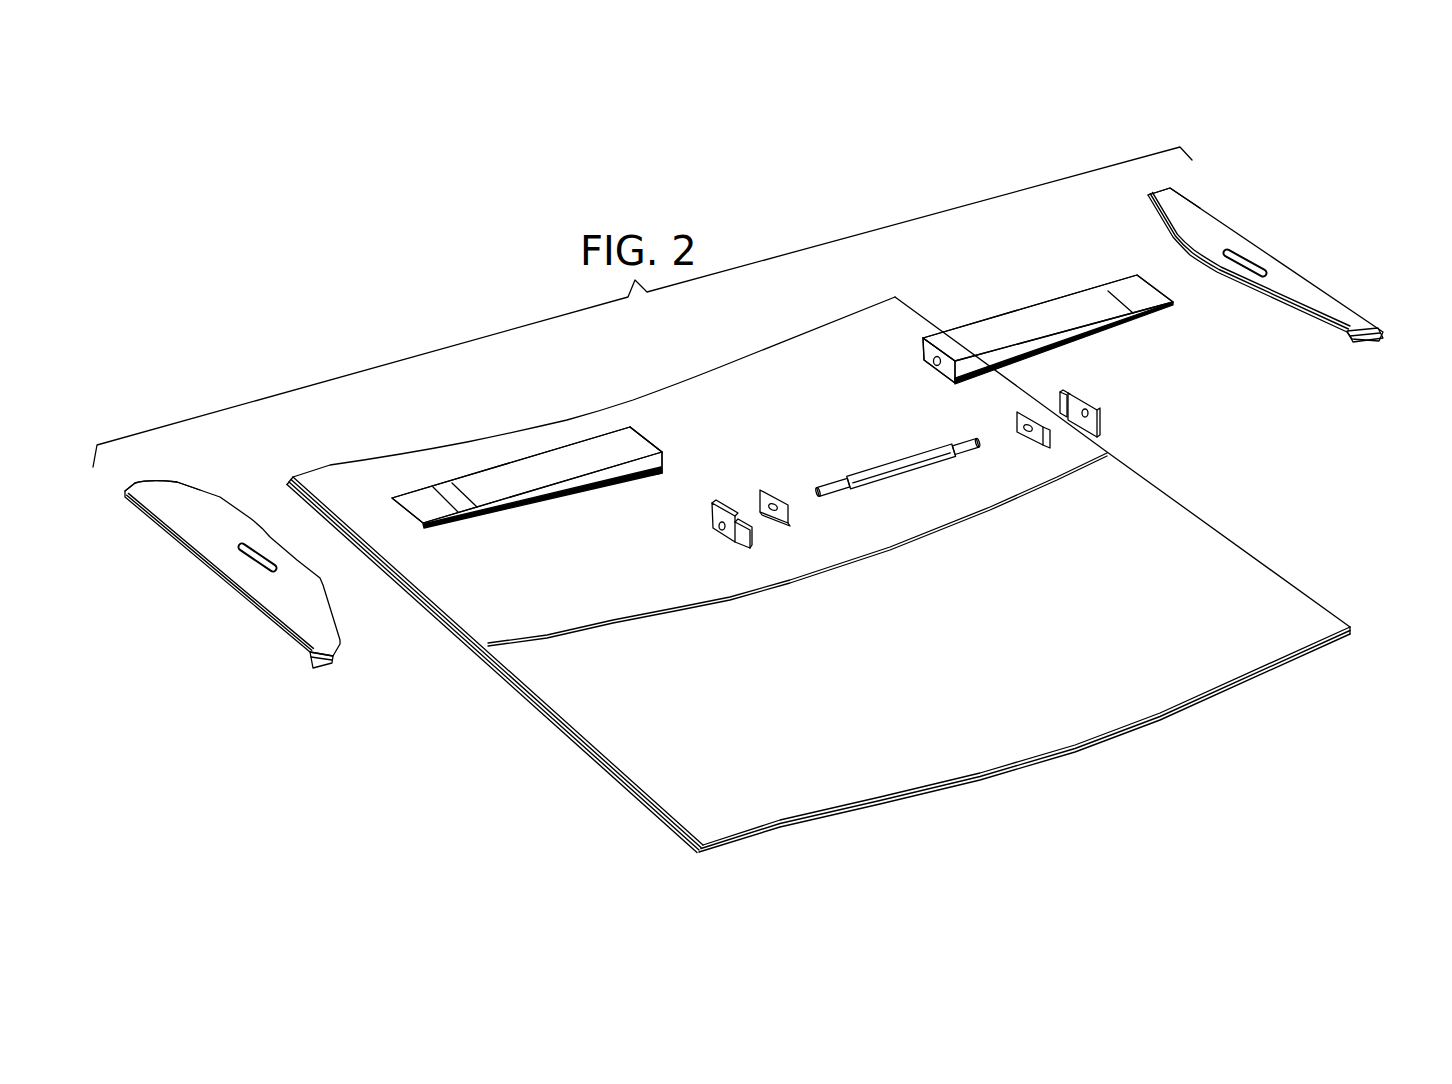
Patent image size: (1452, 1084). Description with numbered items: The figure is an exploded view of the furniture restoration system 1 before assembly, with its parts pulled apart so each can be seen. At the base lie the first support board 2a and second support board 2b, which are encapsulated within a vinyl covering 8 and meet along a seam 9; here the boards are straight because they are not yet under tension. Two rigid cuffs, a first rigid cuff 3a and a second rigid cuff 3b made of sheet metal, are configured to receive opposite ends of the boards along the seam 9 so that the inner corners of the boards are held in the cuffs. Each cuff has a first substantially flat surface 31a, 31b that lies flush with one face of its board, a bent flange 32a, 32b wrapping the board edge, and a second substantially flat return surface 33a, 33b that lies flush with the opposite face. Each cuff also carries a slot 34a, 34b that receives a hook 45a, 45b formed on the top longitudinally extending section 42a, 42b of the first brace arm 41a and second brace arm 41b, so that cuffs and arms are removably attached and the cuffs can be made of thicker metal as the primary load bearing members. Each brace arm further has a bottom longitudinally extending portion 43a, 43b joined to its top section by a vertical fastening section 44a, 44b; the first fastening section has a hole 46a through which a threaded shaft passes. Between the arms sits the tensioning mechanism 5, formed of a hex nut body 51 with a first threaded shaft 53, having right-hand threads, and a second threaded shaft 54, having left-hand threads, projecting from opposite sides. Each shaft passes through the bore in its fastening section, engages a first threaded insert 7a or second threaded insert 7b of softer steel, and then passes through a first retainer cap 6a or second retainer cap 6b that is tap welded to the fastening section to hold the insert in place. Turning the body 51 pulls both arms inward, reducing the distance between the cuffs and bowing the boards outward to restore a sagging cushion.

The furniture restoration system 1 is at (478, 392).
The first support board 2a is at (1284, 647).
The second support board 2b is at (330, 466).
The first rigid cuff 3a is at (1271, 284).
The second rigid cuff 3b is at (247, 588).
The first substantially flat surface 31a is at (1366, 343).
The first substantially flat surface 31b is at (328, 664).
The bent flange 32a is at (1385, 330).
The bent flange 32b is at (280, 633).
The second substantially flat return surface 33a is at (1163, 198).
The second substantially flat return surface 33b is at (152, 487).
The slot 34a is at (1262, 268).
The slot 34b is at (263, 557).
The first brace arm 41a is at (1005, 315).
The second brace arm 41b is at (522, 498).
The top longitudinally extending section 42a is at (975, 372).
The top longitudinally extending section 42b is at (606, 478).
The bottom longitudinally extending portion 43a is at (1074, 322).
The bottom longitudinally extending portion 43b is at (555, 463).
The vertical fastening section 44a is at (922, 348).
The vertical fastening section 44b is at (665, 452).
The hook 45a is at (1172, 303).
The hook 45b is at (432, 530).
The hole 46a is at (930, 356).
The tensioning mechanism 5 is at (910, 475).
The hex nut body 51 is at (900, 478).
The first threaded shaft 53 is at (830, 494).
The second threaded shaft 54 is at (967, 452).
The first retainer cap 6a is at (1097, 402).
The second retainer cap 6b is at (745, 538).
The first threaded insert 7a is at (1049, 442).
The second threaded insert 7b is at (788, 516).
The vinyl covering 8 is at (1300, 593).
The seam 9 is at (605, 626).